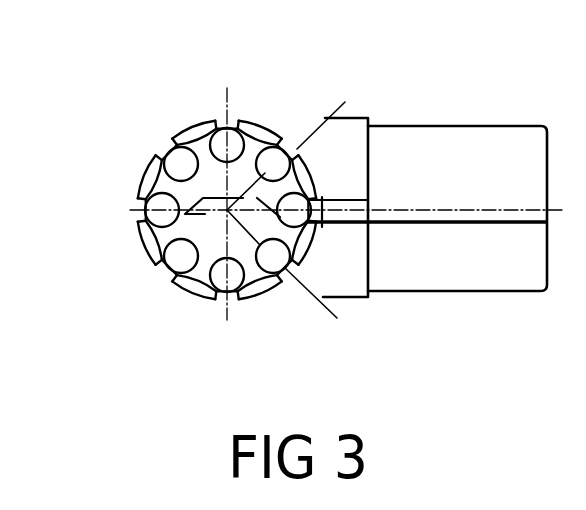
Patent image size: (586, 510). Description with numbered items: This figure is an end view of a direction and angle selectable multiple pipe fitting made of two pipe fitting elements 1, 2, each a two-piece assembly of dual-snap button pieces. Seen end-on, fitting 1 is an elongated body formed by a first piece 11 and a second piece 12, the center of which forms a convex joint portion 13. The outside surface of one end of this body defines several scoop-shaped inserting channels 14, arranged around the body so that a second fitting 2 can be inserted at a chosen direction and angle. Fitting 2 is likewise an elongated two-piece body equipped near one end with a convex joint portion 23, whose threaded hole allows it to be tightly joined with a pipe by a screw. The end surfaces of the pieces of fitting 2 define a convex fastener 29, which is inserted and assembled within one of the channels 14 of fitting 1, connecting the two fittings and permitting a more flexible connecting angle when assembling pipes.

The pipe fitting element 1 is at (123, 163).
The second fitting 2 is at (453, 125).
The first piece 11 is at (187, 292).
The second piece 12 is at (195, 127).
The convex joint portion 13 is at (193, 293).
The scoop-shaped inserting channels 14 is at (182, 260).
The convex joint portion 23 is at (360, 118).
The convex fastener 29 is at (296, 148).